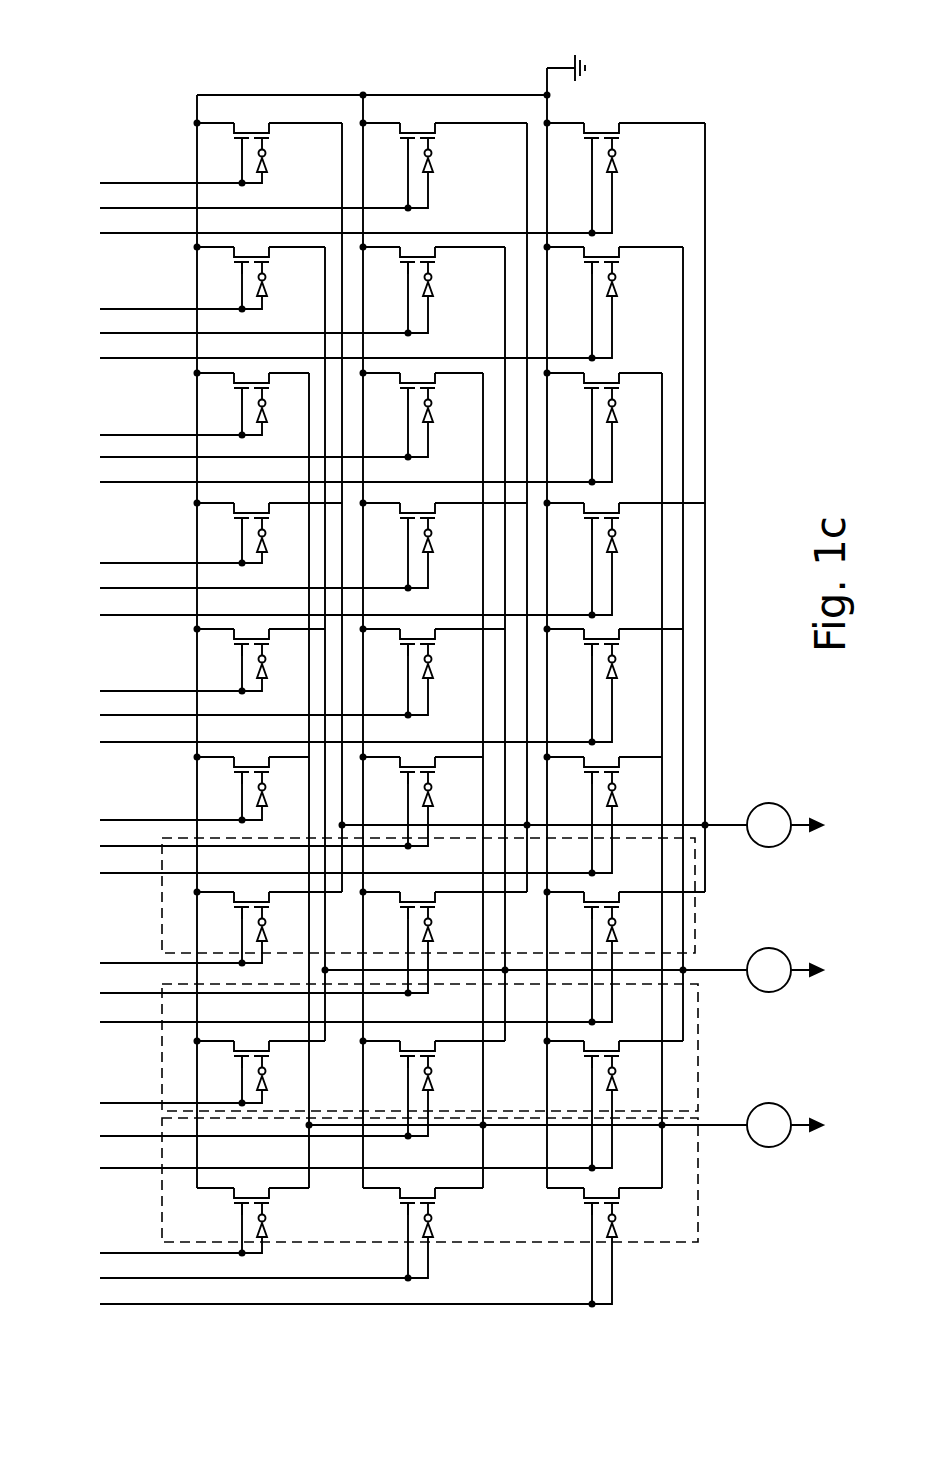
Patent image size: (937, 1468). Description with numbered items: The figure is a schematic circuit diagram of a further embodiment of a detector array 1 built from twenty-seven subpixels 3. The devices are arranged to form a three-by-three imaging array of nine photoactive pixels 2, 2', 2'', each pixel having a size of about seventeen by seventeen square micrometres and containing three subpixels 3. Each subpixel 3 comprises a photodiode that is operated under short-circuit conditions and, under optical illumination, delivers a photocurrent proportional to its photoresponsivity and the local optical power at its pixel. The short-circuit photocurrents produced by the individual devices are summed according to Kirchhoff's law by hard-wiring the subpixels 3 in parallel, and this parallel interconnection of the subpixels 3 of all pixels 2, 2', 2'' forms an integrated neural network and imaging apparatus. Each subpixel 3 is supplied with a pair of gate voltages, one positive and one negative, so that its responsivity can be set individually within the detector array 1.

The detector array 1 is at (140, 75).
The photoactive pixel 2 is at (355, 1213).
The photoactive pixel 2' is at (355, 1078).
The photoactive pixel 2'' is at (358, 932).
The subpixel 3 is at (223, 1207).